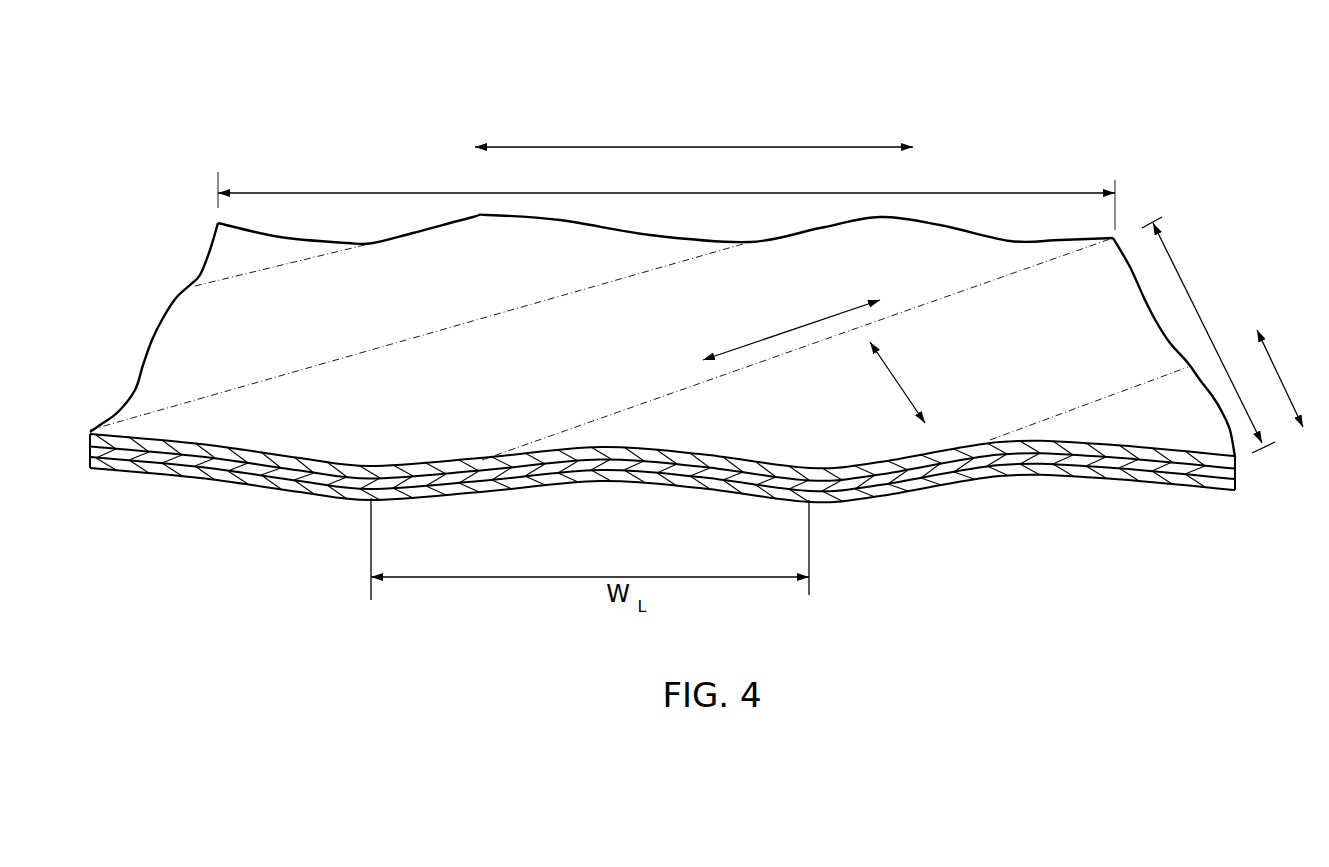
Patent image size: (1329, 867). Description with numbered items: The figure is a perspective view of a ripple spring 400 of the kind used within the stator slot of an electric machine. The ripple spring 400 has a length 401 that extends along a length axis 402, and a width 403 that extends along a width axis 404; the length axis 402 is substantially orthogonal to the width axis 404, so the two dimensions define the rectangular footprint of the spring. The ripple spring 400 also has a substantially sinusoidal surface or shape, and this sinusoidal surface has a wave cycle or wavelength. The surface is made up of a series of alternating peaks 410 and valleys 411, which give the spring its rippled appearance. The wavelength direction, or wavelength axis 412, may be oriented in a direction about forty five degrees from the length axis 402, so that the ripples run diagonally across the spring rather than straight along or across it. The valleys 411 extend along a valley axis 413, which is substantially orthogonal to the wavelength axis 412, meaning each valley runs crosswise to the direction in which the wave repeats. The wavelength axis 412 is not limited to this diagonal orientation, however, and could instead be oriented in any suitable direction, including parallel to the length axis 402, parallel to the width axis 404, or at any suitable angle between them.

The ripple spring 400 is at (978, 75).
The length 401 is at (1023, 193).
The length axis 402 is at (722, 147).
The width 403 is at (1190, 292).
The width axis 404 is at (1282, 383).
The peaks 410 is at (142, 477).
The valleys 411 is at (362, 507).
The wavelength axis 412 is at (903, 387).
The valley axis 413 is at (792, 328).